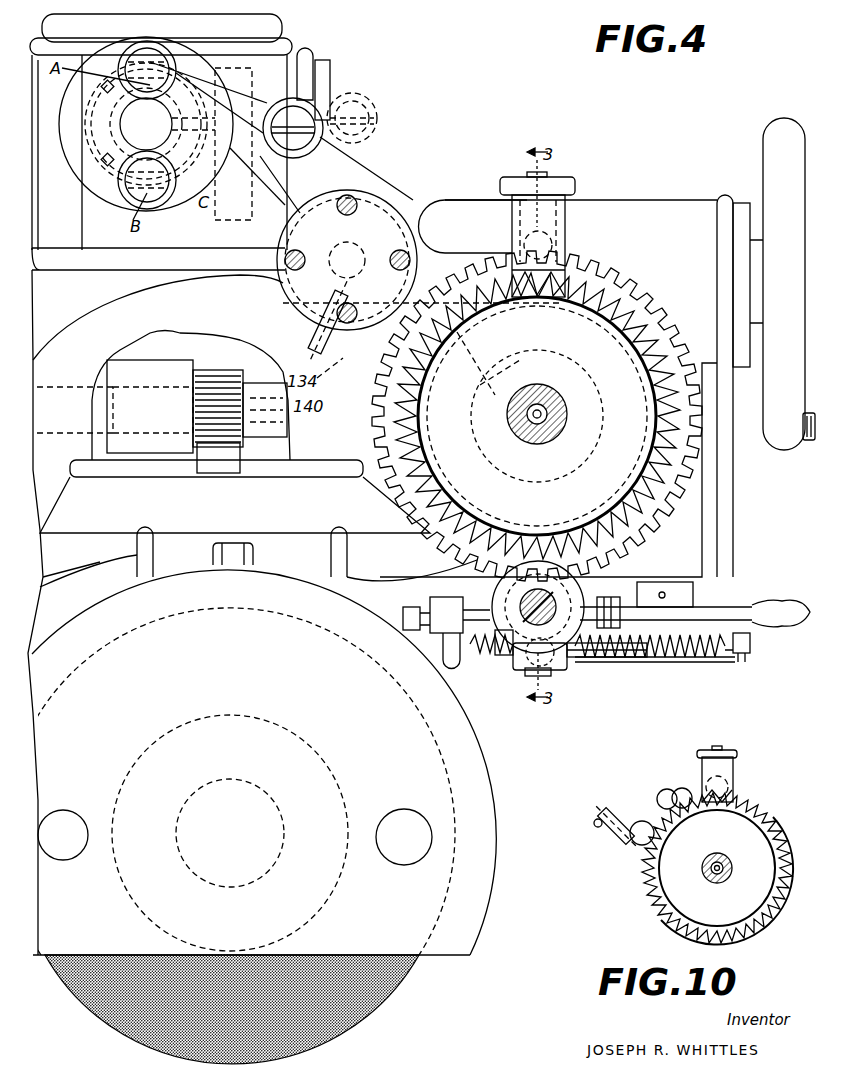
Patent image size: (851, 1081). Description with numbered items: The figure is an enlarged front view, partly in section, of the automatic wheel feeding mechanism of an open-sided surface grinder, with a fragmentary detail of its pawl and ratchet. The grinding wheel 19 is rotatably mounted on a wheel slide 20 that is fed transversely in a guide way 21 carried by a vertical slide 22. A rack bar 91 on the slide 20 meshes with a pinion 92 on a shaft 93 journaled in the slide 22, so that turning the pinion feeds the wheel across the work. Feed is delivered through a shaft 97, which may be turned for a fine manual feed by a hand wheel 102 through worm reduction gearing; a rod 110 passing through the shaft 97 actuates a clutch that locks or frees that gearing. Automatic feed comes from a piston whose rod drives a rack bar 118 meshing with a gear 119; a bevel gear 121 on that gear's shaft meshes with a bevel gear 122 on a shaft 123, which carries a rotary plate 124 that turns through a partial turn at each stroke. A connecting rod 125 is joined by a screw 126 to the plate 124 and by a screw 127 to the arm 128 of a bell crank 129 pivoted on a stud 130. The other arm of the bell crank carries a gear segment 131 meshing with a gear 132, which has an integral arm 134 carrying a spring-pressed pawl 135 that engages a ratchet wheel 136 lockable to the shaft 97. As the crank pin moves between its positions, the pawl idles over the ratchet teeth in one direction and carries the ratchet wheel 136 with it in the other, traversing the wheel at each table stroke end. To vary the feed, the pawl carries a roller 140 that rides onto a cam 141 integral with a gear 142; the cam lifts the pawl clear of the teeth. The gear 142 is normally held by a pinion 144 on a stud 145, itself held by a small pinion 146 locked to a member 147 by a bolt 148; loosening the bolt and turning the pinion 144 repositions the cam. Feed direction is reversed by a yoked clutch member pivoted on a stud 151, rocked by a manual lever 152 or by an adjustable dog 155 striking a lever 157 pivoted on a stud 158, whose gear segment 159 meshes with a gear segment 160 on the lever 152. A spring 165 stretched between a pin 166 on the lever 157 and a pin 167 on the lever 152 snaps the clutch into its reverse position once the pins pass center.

In FIG. 4, the grinding wheel 19 is at (395, 980).
In FIG. 4, the wheel slide 20 is at (235, 505).
In FIG. 4, the guide way 21 is at (97, 495).
In FIG. 4, the vertical slide 22 is at (191, 380).
In FIG. 4, the rack bar 91 is at (217, 460).
In FIG. 4, the pinion 92 is at (213, 380).
In FIG. 4, the shaft 93 is at (263, 420).
In FIG. 4, the shaft 97 is at (562, 396).
In FIG. 10, the shaft 97 is at (720, 873).
In FIG. 4, the hand wheel 102 is at (775, 132).
In FIG. 4, the rod 110 is at (553, 424).
In FIG. 10, the rod 110 is at (720, 863).
In FIG. 4, the rack bar 118 is at (222, 207).
In FIG. 4, the gear 119 is at (243, 153).
In FIG. 4, the bevel gear 121 is at (110, 157).
In FIG. 4, the bevel gear 122 is at (117, 173).
In FIG. 4, the shaft 123 is at (132, 137).
In FIG. 4, the rotary plate 124 is at (100, 140).
In FIG. 4, the connecting rod 125 is at (268, 104).
In FIG. 4, the screw 126 is at (293, 84).
In FIG. 4, the screw 127 is at (297, 120).
In FIG. 4, the arm 128 is at (340, 163).
In FIG. 4, the bell crank 129 is at (427, 238).
In FIG. 4, the stud 130 is at (350, 257).
In FIG. 4, the gear segment 131 is at (502, 228).
In FIG. 4, the gear 132 is at (577, 363).
In FIG. 4, the arm 134 is at (550, 222).
In FIG. 10, the arm 134 is at (702, 768).
In FIG. 4, the pawl 135 is at (560, 247).
In FIG. 10, the pawl 135 is at (727, 795).
In FIG. 4, the ratchet wheel 136 is at (633, 333).
In FIG. 10, the ratchet wheel 136 is at (753, 822).
In FIG. 4, the roller 140 is at (553, 232).
In FIG. 10, the roller 140 is at (702, 783).
In FIG. 4, the cam 141 is at (398, 380).
In FIG. 10, the cam 141 is at (650, 873).
In FIG. 4, the gear 142 is at (657, 532).
In FIG. 4, the pinion 144 is at (580, 645).
In FIG. 4, the stud 145 is at (590, 645).
In FIG. 4, the small pinion 146 is at (547, 673).
In FIG. 4, the member 147 is at (527, 690).
In FIG. 4, the bolt 148 is at (560, 670).
In FIG. 4, the stud 151 is at (663, 657).
In FIG. 4, the lever 152 is at (777, 617).
In FIG. 4, the dog 155 is at (453, 600).
In FIG. 4, the lever 157 is at (493, 652).
In FIG. 4, the stud 158 is at (535, 562).
In FIG. 4, the gear segment 159 is at (612, 593).
In FIG. 4, the gear segment 160 is at (668, 660).
In FIG. 4, the spring 165 is at (508, 653).
In FIG. 4, the pin 166 is at (446, 660).
In FIG. 4, the pin 167 is at (743, 653).